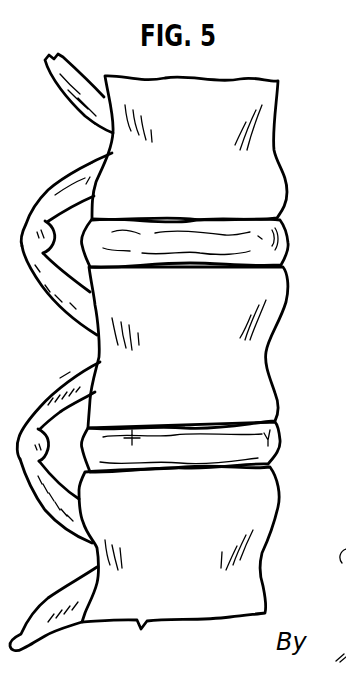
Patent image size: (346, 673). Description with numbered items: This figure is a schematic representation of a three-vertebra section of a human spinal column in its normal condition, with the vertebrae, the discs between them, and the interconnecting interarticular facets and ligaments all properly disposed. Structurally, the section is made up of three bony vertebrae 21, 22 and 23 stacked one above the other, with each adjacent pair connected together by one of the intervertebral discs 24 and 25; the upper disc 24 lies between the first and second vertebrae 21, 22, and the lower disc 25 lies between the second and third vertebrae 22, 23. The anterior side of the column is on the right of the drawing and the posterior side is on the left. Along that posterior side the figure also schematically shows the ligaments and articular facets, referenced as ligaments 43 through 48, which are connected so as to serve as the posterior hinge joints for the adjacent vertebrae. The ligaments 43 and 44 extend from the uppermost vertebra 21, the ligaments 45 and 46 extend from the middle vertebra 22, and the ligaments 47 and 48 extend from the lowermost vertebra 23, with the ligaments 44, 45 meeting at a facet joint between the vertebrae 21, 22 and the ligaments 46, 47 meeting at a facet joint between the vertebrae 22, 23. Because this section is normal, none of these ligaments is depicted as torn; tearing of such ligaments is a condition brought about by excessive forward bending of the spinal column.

The bony vertebra 21 is at (277, 155).
The bony vertebra 22 is at (268, 349).
The bony vertebra 23 is at (262, 562).
The intervertebral disc 24 is at (289, 245).
The intervertebral disc 25 is at (280, 452).
The ligament 43 is at (78, 83).
The ligament 44 is at (82, 161).
The ligament 45 is at (55, 306).
The ligament 46 is at (70, 377).
The ligament 47 is at (43, 510).
The ligament 48 is at (53, 607).